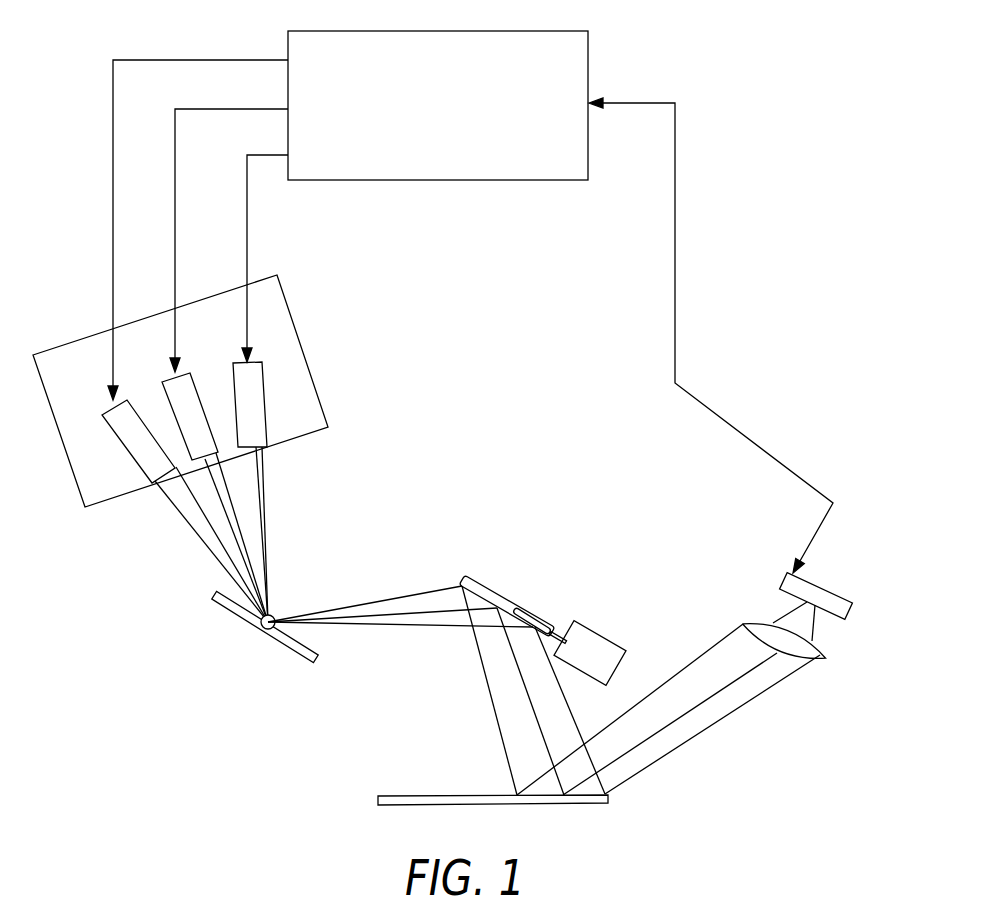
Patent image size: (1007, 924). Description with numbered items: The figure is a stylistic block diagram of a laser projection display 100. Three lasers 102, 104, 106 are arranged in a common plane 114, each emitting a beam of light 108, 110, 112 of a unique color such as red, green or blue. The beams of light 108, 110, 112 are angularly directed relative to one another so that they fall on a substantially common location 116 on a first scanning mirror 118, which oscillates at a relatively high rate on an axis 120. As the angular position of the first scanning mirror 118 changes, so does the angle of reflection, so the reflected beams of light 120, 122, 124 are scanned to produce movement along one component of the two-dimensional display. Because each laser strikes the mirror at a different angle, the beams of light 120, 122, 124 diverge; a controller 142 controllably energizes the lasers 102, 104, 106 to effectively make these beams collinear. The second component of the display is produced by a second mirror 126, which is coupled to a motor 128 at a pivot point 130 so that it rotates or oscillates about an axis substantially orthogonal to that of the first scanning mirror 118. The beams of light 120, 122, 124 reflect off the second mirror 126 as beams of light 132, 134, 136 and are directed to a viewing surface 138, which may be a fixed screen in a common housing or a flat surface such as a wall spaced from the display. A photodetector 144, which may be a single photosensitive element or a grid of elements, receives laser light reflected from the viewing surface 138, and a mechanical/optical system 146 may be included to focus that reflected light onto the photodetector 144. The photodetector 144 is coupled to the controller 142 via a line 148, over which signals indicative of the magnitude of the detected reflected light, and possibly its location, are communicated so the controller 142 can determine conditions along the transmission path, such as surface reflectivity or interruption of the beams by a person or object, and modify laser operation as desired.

The laser projection display 100 is at (752, 190).
The laser 102 is at (122, 433).
The laser 104 is at (187, 383).
The laser 106 is at (257, 378).
The beam of light 108 is at (178, 505).
The beam of light 110 is at (223, 503).
The beam of light 112 is at (261, 530).
The common plane 114 is at (66, 340).
The common location 116 is at (276, 613).
The first scanning mirror 118 is at (300, 648).
The beam of light / axis 120 is at (253, 637).
The beam of light 122 is at (399, 602).
The beam of light 124 is at (431, 590).
The second mirror 126 is at (485, 587).
The motor 128 is at (608, 647).
The pivot point 130 is at (561, 630).
The beam of light 132 is at (574, 718).
The beam of light 134 is at (543, 738).
The beam of light 136 is at (495, 713).
The viewing surface 138 is at (588, 803).
The controller 142 is at (460, 145).
The photodetector 144 is at (846, 612).
The mechanical/optical system 146 is at (813, 656).
The line 148 is at (728, 425).